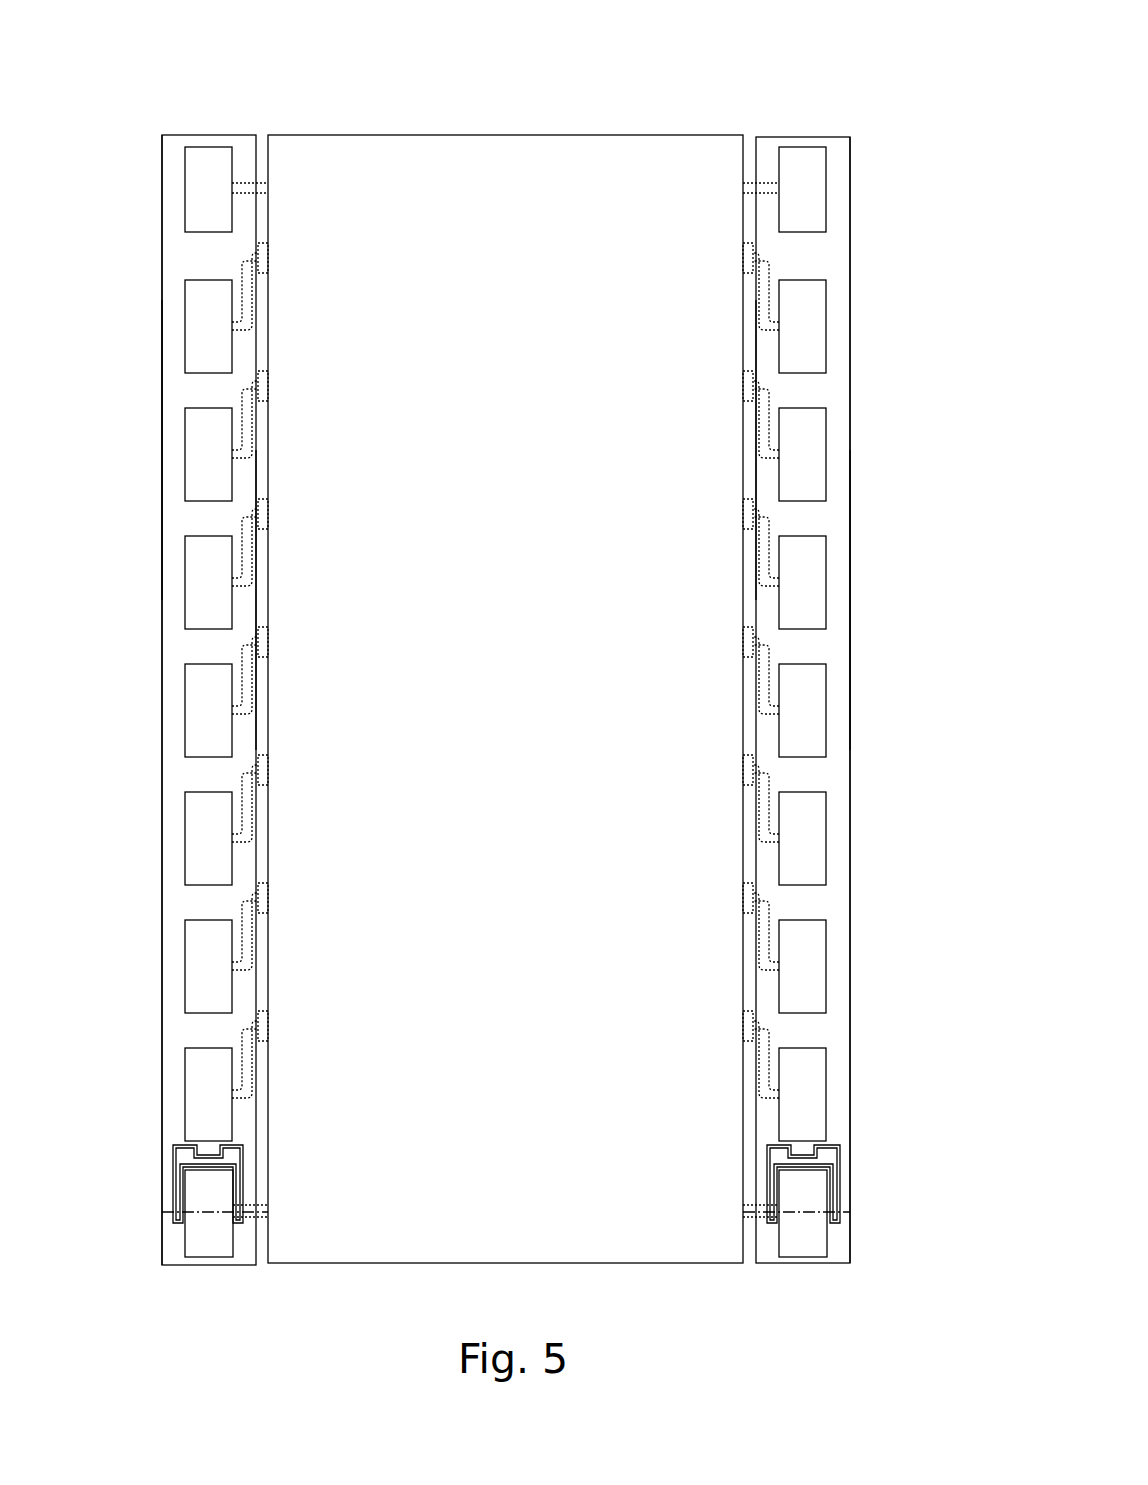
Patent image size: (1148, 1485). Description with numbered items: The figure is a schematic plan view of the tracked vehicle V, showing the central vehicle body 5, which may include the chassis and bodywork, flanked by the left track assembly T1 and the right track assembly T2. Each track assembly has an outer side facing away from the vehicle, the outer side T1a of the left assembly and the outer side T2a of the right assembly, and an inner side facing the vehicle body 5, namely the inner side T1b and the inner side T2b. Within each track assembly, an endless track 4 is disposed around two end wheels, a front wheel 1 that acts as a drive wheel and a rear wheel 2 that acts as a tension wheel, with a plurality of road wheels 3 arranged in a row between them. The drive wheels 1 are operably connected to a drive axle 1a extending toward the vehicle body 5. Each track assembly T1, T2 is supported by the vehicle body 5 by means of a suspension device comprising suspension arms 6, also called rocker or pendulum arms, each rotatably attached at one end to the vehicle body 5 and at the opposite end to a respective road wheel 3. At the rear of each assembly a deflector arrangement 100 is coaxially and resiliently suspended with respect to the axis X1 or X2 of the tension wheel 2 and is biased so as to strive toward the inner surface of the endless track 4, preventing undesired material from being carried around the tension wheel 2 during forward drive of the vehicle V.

The tracked vehicle V is at (712, 68).
The endless track 4 is at (214, 133).
The vehicle body 5 is at (504, 134).
The front wheel 1 is at (505, 189).
The drive axle 1a is at (247, 193).
The road wheel 3 is at (505, 710).
The suspension arm 6 is at (242, 268).
The rear wheel 2 is at (215, 1258).
The deflector arrangement 100 is at (172, 1187).
The axis of the tension wheel X1 is at (195, 1215).
The axis of the tension wheel X2 is at (800, 1212).
The left track assembly T1 is at (160, 747).
The outer side T1a is at (162, 440).
The inner side T1b is at (256, 612).
The right track assembly T2 is at (856, 772).
The outer side T2a is at (850, 645).
The inner side T2b is at (757, 470).